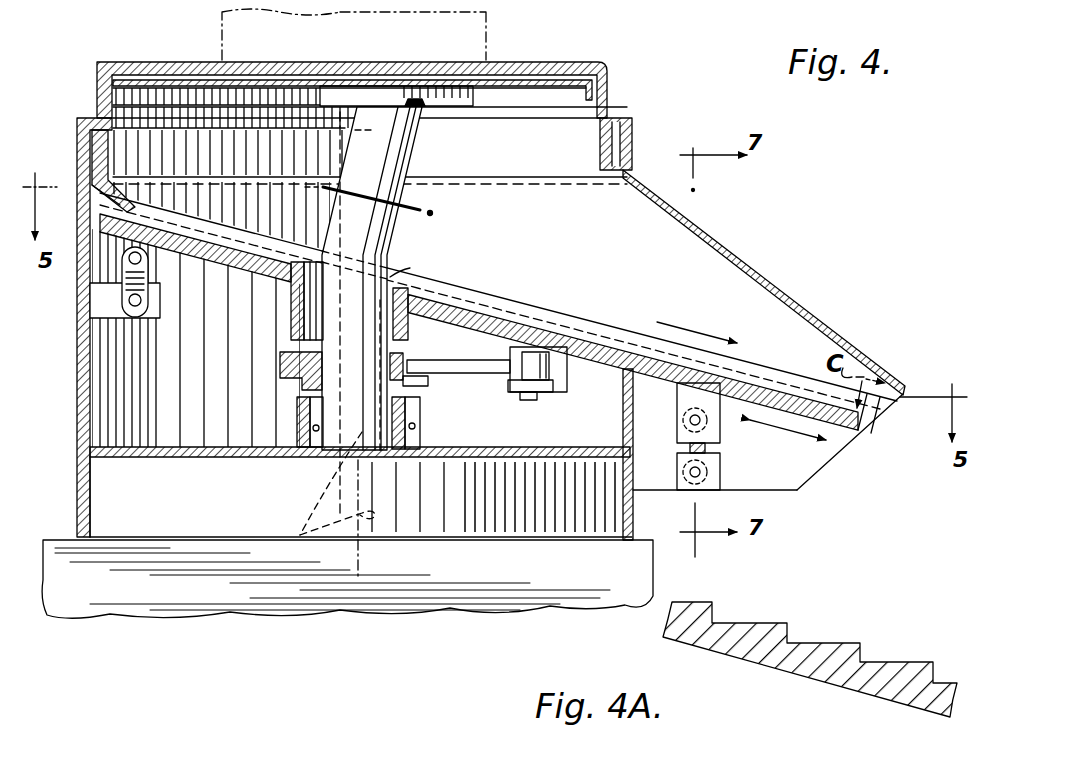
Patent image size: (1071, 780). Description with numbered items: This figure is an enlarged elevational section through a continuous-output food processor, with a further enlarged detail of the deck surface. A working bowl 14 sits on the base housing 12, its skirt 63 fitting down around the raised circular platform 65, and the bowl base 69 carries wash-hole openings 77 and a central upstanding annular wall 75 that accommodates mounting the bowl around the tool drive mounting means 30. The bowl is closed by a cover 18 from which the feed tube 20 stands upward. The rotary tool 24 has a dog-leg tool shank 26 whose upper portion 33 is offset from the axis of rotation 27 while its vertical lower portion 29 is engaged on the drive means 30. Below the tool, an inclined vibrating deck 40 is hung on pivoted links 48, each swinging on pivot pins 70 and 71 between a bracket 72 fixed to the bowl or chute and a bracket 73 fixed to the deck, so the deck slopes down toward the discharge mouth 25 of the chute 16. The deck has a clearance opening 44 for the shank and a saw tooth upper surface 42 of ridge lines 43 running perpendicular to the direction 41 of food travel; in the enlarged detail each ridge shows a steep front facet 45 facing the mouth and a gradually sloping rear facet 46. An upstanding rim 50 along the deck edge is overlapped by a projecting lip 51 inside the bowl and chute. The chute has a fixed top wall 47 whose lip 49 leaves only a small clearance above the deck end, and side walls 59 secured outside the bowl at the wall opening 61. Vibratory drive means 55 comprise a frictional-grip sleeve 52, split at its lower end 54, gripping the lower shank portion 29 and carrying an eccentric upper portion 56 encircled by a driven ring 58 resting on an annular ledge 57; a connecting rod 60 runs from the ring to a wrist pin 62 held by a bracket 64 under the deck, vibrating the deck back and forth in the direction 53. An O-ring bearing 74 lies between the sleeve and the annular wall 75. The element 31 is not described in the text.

In FIG. 4, the base housing 12 is at (163, 600).
In FIG. 4, the working bowl 14 is at (80, 395).
In FIG. 4, the chute 16 is at (773, 260).
In FIG. 4, the cover 18 is at (140, 62).
In FIG. 4, the feed tube 20 is at (490, 14).
In FIG. 4, the rotary tool 24 is at (575, 80).
In FIG. 4, the discharge mouth 25 is at (872, 414).
In FIG. 4, the tool shank 26 is at (408, 236).
In FIG. 4, the axis of rotation 27 is at (360, 566).
In FIG. 4, the vertical lower portion 29 is at (392, 277).
In FIG. 4, the tool drive mounting means 30 is at (315, 519).
In FIG. 4, the spring hook 31 is at (325, 483).
In FIG. 4, the upper portion 33 is at (415, 150).
In FIG. 4, the vibrating deck 40 is at (567, 333).
In FIG. 4A, the vibrating deck 40 is at (787, 670).
In FIG. 4, the direction of food propulsion 41 is at (700, 322).
In FIG. 4, the saw tooth upper surface 42 is at (508, 312).
In FIG. 4A, the saw tooth upper surface 42 is at (828, 596).
In FIG. 4A, the ridge lines 43 is at (712, 603).
In FIG. 4, the clearance opening 44 is at (300, 262).
In FIG. 4A, the front facet 45 is at (716, 610).
In FIG. 4A, the rear facet 46 is at (838, 644).
In FIG. 4, the fixed top wall 47 is at (827, 313).
In FIG. 4, the pivoted links 48 is at (147, 276).
In FIG. 4, the lip 49 is at (907, 388).
In FIG. 4, the upstanding rim 50 is at (85, 195).
In FIG. 4, the lip 51 is at (90, 150).
In FIG. 4, the frictional-grip sleeve 52 is at (422, 418).
In FIG. 4, the direction of vibration 53 is at (789, 439).
In FIG. 4, the lower end 54 is at (320, 455).
In FIG. 4, the vibratory drive means 55 is at (297, 425).
In FIG. 4, the eccentric upper portion 56 is at (300, 340).
In FIG. 4, the annular ledge 57 is at (425, 380).
In FIG. 4, the driven ring 58 is at (285, 372).
In FIG. 4, the side walls 59 is at (800, 492).
In FIG. 4, the connecting rod 60 is at (500, 360).
In FIG. 4, the opening 61 is at (623, 333).
In FIG. 4, the wrist pin 62 is at (530, 400).
In FIG. 4, the skirt 63 is at (80, 483).
In FIG. 4, the bracket 64 is at (566, 372).
In FIG. 4, the raised circular platform 65 is at (110, 498).
In FIG. 4, the bowl base 69 is at (135, 457).
In FIG. 4, the pivot pin 70 is at (105, 292).
In FIG. 4, the pivot pin 71 is at (80, 395).
In FIG. 4, the bracket 72 is at (133, 300).
In FIG. 4, the bracket 73 is at (120, 250).
In FIG. 4, the O-ring bearing 74 is at (300, 432).
In FIG. 4, the upstanding annular wall 75 is at (425, 436).
In FIG. 4, the openings 77 is at (230, 457).